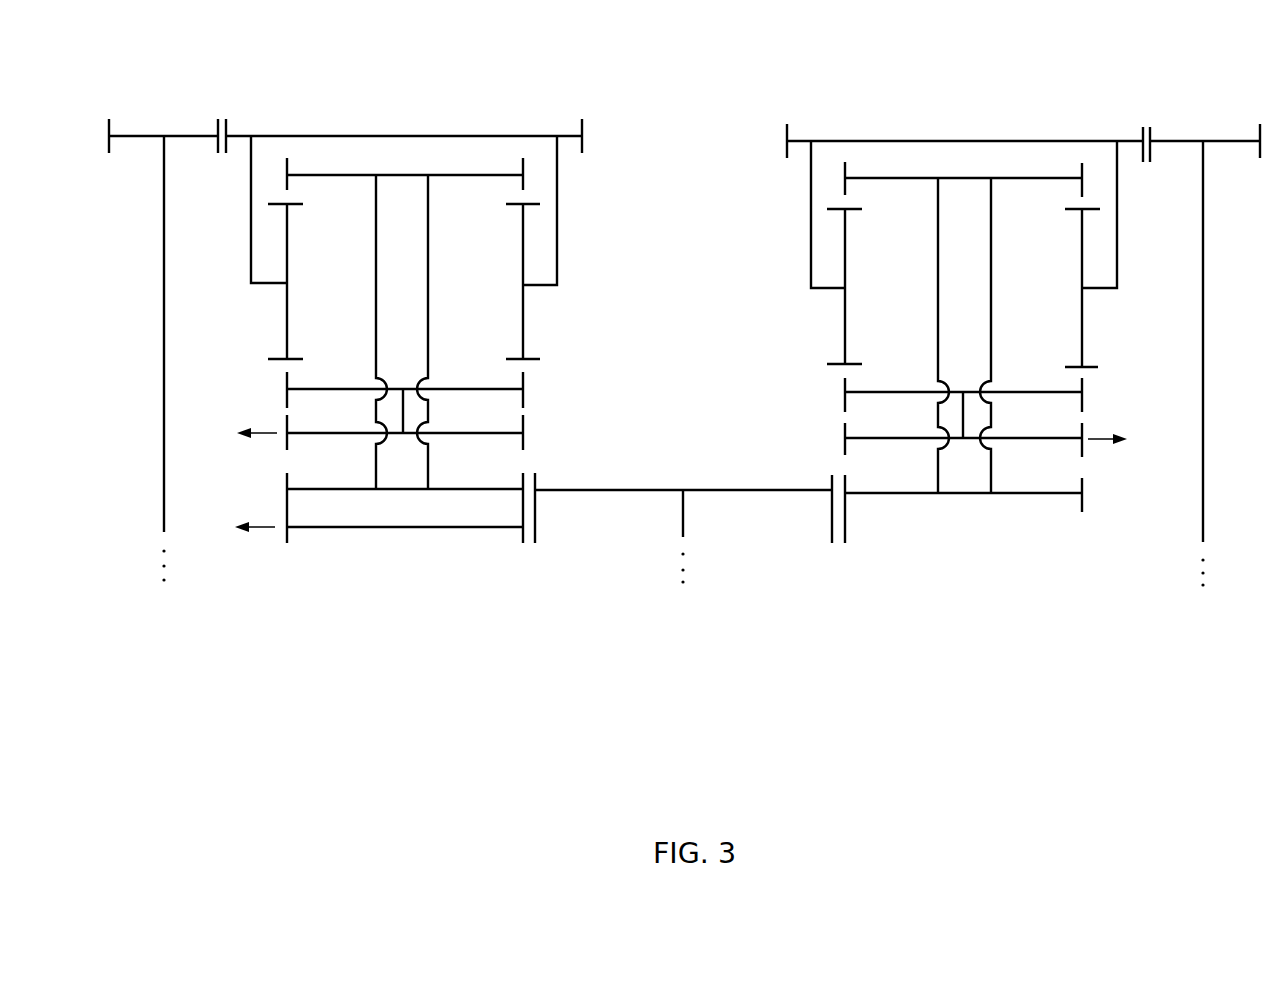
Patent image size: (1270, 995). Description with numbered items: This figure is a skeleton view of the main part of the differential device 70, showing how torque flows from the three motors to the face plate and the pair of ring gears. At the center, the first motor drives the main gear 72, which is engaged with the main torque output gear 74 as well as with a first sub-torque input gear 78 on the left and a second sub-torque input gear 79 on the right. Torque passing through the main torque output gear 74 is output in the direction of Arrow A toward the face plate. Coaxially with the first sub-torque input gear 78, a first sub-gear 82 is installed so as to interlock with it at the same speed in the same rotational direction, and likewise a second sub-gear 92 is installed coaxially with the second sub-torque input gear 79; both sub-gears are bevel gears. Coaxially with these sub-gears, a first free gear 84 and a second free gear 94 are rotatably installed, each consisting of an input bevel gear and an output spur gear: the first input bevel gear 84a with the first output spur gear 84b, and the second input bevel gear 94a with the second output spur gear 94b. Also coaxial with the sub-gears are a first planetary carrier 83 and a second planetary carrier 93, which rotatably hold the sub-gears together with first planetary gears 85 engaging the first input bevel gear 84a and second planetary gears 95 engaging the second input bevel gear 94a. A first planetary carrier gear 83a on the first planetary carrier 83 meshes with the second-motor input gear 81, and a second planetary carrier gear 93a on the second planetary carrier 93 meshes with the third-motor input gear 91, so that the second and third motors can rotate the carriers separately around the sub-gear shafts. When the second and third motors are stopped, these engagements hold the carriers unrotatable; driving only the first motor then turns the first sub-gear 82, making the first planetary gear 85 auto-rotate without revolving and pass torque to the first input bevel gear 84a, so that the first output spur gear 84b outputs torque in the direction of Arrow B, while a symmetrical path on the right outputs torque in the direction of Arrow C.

The differential device 70 is at (717, 771).
The main gear 72 is at (700, 489).
The main torque output gear 74 is at (365, 529).
The first sub-torque input gear 78 is at (447, 492).
The second sub-torque input gear 79 is at (953, 496).
The M2 input gear 81 is at (154, 134).
The first sub-gear 82 is at (468, 173).
The first planetary carrier 83 is at (358, 135).
The first planetary carrier gear 83a is at (232, 132).
The first free gear 84 is at (456, 414).
The first input bevel gear 84a is at (500, 389).
The first output spur gear 84b is at (500, 436).
The first planetary gear 85 is at (287, 256).
The M3 input gear 91 is at (1220, 140).
The second sub-gear 92 is at (1017, 176).
The second planetary carrier 93 is at (918, 140).
The second planetary carrier gear 93a is at (1140, 136).
The second free gear 94 is at (914, 429).
The second input bevel gear 94a is at (865, 392).
The second output spur gear 94b is at (865, 438).
The second planetary gear 95 is at (843, 250).